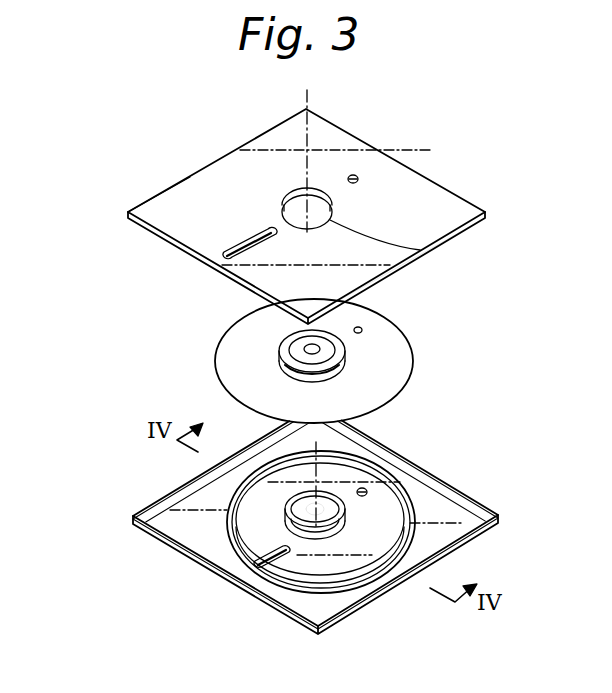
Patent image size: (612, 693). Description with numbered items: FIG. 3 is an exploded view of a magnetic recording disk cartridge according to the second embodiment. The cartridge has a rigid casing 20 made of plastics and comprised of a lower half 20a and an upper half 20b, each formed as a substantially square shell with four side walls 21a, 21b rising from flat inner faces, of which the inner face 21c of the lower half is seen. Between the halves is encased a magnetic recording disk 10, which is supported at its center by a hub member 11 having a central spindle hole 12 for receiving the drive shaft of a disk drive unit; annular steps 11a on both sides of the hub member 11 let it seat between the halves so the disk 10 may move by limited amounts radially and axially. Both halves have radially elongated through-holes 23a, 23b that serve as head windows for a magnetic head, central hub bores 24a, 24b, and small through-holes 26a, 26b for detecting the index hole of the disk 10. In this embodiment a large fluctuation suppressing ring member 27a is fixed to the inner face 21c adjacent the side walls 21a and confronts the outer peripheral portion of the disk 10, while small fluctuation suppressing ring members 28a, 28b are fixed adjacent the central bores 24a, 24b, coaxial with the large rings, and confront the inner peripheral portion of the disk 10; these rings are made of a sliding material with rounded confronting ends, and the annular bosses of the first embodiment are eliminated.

The magnetic recording disk 10 is at (396, 338).
The hub member 11 is at (294, 368).
The annular steps 11a is at (345, 358).
The central spindle hole 12 is at (303, 350).
The rigid casing 20 is at (328, 211).
The lower half 20a is at (483, 495).
The upper half 20b is at (438, 200).
The side walls 21a is at (350, 636).
The side walls 21b is at (136, 232).
The inner face 21c is at (183, 528).
The radially elongated through-hole 23a is at (256, 563).
The radially elongated through-hole 23b is at (226, 255).
The central hub bore 24a is at (340, 532).
The central hub bore 24b is at (420, 250).
The small through-hole 26a is at (365, 488).
The small through-hole 26b is at (356, 176).
The large fluctuation suppressing ring member 27a is at (450, 508).
The small fluctuation suppressing ring member 28a is at (290, 513).
The small fluctuation suppressing ring member 28b is at (288, 200).